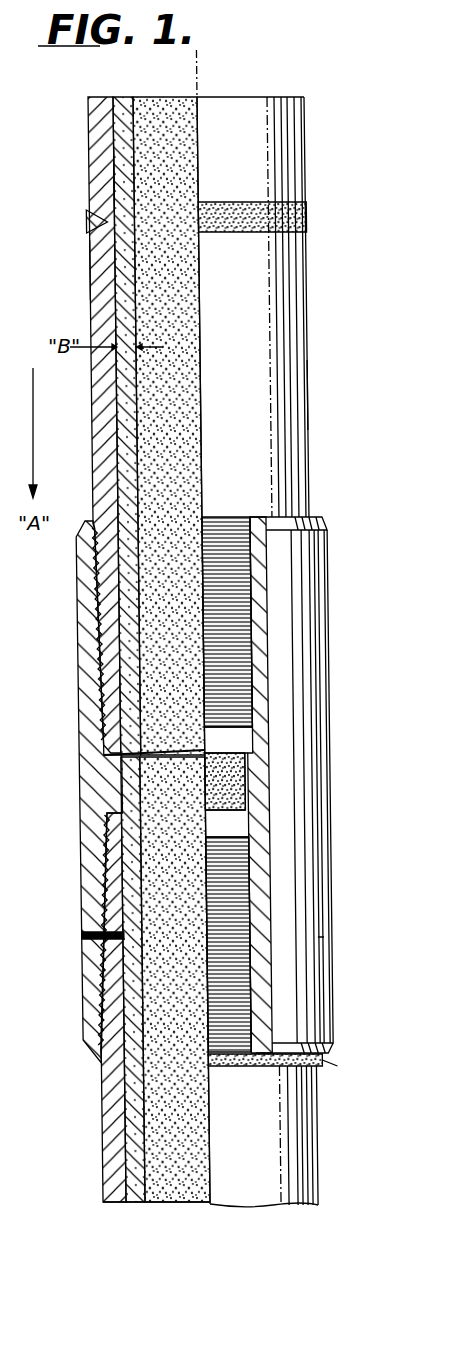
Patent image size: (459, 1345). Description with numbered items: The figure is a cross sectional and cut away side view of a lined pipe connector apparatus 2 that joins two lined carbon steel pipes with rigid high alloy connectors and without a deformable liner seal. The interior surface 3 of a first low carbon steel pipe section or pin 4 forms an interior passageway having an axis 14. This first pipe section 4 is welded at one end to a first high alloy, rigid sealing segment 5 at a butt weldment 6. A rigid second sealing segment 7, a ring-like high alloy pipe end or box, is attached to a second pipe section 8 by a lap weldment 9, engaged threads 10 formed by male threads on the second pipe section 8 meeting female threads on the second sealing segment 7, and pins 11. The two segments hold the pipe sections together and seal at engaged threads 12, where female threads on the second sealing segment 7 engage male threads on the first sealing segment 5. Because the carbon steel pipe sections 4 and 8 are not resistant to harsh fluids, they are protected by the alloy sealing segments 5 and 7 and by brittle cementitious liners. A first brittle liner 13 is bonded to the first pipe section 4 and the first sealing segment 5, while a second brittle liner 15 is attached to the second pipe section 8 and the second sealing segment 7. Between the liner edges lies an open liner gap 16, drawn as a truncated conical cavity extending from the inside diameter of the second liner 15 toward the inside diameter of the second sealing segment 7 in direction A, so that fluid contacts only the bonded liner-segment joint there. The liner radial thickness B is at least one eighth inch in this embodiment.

The lined pipe connector apparatus 2 is at (326, 294).
The interior surface 3 is at (116, 176).
The first pipe section 4 is at (91, 152).
The first sealing segment 5 is at (91, 268).
The butt weldment 6 is at (87, 221).
The second sealing segment 7 is at (80, 787).
The second pipe section 8 is at (104, 1137).
The lap weldment 9 is at (94, 1060).
The engaged threads 10 is at (104, 990).
The pins 11 is at (82, 937).
The engaged threads 12 is at (237, 520).
The first brittle liner 13 is at (117, 428).
The axis 14 is at (204, 73).
The second brittle liner 15 is at (208, 787).
The liner gap 16 is at (157, 742).